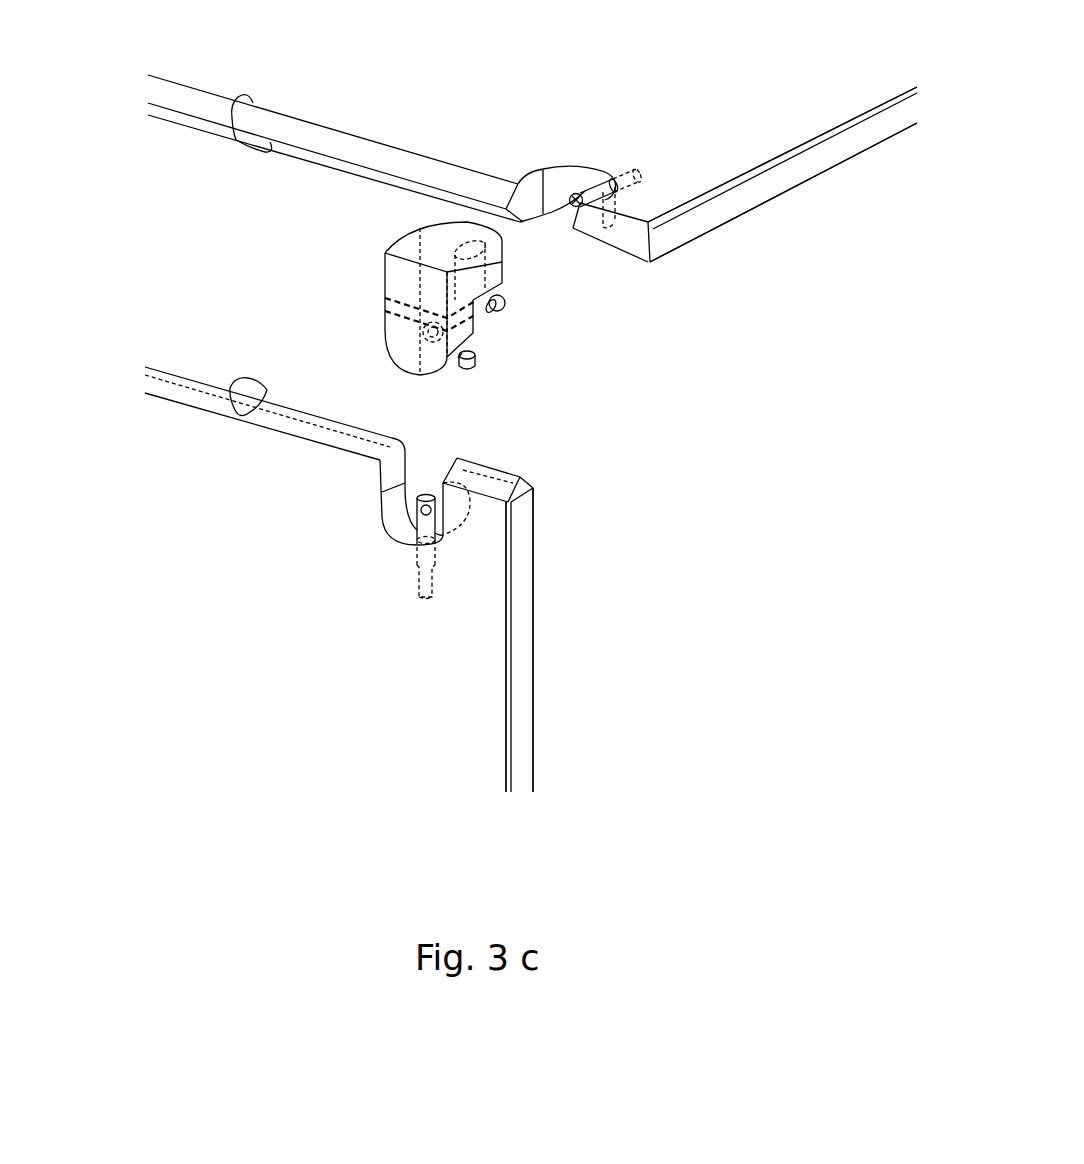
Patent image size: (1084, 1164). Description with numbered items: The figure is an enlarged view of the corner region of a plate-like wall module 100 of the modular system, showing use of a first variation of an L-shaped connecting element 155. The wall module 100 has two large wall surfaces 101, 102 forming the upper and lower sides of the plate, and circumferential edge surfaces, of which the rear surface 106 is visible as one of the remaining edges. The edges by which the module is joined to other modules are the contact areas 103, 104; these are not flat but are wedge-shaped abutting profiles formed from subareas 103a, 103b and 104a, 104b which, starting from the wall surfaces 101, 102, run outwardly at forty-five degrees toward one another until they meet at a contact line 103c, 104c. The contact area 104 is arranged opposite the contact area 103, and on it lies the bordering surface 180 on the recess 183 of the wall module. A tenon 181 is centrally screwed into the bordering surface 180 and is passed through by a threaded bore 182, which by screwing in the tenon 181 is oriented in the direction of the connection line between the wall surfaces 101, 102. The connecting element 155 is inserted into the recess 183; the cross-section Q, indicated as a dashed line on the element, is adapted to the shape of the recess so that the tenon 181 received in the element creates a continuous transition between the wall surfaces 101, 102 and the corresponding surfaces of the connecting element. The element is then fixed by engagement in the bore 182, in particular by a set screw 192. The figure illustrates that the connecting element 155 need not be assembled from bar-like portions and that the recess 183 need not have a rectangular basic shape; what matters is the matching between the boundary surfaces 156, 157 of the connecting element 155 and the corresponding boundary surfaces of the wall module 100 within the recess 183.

The wall module 100 is at (422, 38).
The wall surface 101 is at (773, 138).
The wall surface 102 is at (785, 208).
The contact area 103 is at (268, 390).
The subarea of contact area 103a is at (172, 392).
The subarea of contact area 103b is at (403, 443).
The contact line 103c is at (150, 368).
The contact area 104 is at (238, 129).
The subarea of contact area 104a is at (350, 156).
The subarea of contact area 104b is at (337, 164).
The contact line 104c is at (175, 113).
The rear surface 106 is at (727, 203).
The L-shaped connecting element 155 is at (392, 268).
The boundary surface 156 is at (503, 262).
The boundary surface 157 is at (455, 362).
The bordering surface 180 is at (525, 205).
The tenon 181 is at (590, 182).
The bore 182 is at (578, 195).
The recess 183 is at (553, 188).
The set screw 192 is at (478, 362).
The cross-section Q is at (392, 312).